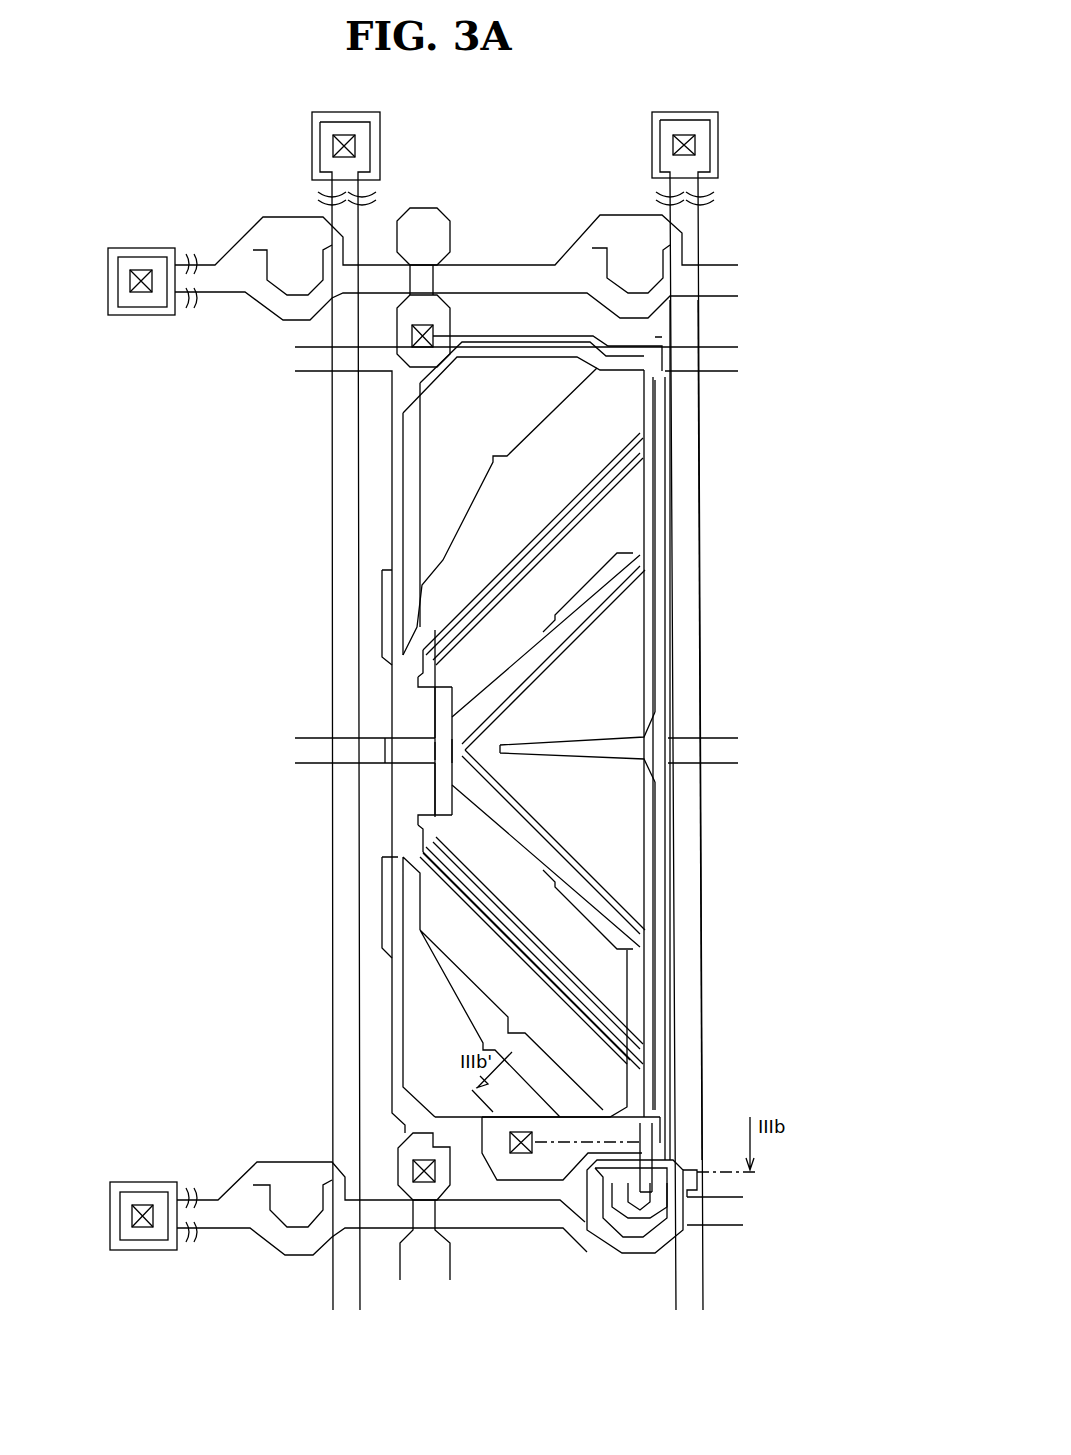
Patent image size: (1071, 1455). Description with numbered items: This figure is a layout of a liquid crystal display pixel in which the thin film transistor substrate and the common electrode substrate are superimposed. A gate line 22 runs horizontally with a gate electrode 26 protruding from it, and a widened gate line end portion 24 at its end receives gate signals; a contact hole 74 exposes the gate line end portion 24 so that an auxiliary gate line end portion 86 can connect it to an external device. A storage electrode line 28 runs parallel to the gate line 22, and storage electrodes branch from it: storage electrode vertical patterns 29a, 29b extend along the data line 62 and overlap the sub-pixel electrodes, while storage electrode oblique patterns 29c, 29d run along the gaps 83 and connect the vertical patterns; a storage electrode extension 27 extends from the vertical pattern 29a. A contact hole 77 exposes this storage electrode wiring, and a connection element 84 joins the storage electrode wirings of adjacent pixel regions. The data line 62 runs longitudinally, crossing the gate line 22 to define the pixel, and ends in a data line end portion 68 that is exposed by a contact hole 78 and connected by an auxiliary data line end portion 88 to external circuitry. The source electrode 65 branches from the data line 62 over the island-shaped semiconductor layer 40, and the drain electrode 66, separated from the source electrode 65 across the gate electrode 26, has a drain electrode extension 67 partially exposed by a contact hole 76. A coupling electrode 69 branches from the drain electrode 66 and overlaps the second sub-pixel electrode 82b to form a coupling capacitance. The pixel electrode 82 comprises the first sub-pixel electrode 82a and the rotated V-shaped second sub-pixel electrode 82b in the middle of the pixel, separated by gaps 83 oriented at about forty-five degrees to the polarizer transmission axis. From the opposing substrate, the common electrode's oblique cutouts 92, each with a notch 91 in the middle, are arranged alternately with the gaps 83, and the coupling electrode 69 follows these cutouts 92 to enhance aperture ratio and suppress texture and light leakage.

The gate line 22 is at (502, 1236).
The gate line end portion 24 is at (126, 1183).
The gate electrode 26 is at (652, 1134).
The storage electrode extension 27 is at (451, 697).
The storage electrode line 28 is at (298, 377).
The storage electrode vertical pattern 29a is at (390, 682).
The storage electrode vertical pattern 29b is at (672, 557).
The storage electrode oblique pattern 29c is at (441, 614).
The storage electrode oblique pattern 29d is at (570, 973).
The semiconductor layer 40 is at (586, 1232).
The data line 62 is at (700, 605).
The source electrode 65 is at (618, 1251).
The drain electrode 66 is at (668, 1174).
The drain electrode extension 67 is at (482, 1128).
The data line end portion 68 is at (671, 116).
The coupling electrode 69 is at (534, 818).
The contact hole 74 is at (132, 1216).
The contact hole 76 is at (518, 1154).
The contact hole 77 is at (413, 1170).
The contact hole 78 is at (673, 137).
The pixel electrode 82 is at (770, 432).
The first sub-pixel electrode 82a is at (660, 391).
The second sub-pixel electrode 82b is at (658, 444).
The gap 83 is at (534, 546).
The connection element 84 is at (402, 1278).
The auxiliary gate line end portion 86 is at (124, 1250).
The auxiliary data line end portion 88 is at (720, 124).
The notch 91 is at (504, 454).
The oblique cutout 92 is at (417, 520).